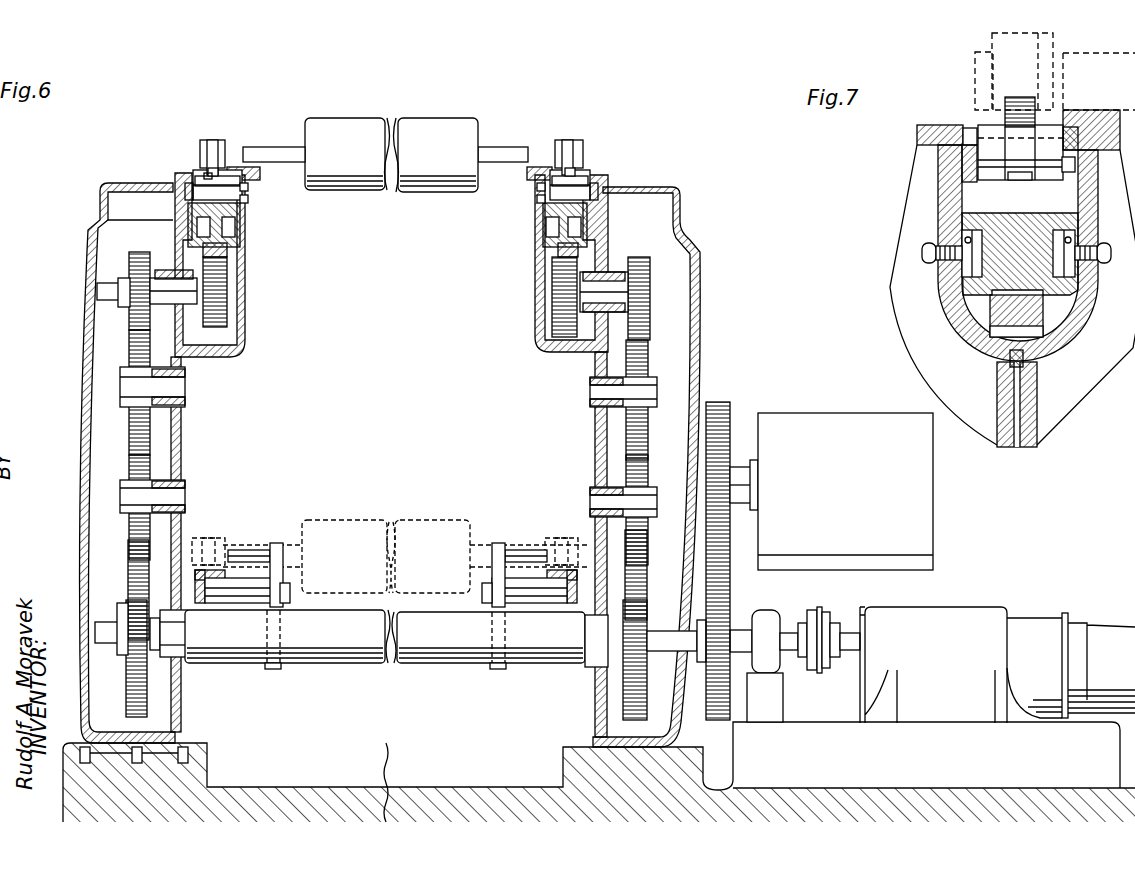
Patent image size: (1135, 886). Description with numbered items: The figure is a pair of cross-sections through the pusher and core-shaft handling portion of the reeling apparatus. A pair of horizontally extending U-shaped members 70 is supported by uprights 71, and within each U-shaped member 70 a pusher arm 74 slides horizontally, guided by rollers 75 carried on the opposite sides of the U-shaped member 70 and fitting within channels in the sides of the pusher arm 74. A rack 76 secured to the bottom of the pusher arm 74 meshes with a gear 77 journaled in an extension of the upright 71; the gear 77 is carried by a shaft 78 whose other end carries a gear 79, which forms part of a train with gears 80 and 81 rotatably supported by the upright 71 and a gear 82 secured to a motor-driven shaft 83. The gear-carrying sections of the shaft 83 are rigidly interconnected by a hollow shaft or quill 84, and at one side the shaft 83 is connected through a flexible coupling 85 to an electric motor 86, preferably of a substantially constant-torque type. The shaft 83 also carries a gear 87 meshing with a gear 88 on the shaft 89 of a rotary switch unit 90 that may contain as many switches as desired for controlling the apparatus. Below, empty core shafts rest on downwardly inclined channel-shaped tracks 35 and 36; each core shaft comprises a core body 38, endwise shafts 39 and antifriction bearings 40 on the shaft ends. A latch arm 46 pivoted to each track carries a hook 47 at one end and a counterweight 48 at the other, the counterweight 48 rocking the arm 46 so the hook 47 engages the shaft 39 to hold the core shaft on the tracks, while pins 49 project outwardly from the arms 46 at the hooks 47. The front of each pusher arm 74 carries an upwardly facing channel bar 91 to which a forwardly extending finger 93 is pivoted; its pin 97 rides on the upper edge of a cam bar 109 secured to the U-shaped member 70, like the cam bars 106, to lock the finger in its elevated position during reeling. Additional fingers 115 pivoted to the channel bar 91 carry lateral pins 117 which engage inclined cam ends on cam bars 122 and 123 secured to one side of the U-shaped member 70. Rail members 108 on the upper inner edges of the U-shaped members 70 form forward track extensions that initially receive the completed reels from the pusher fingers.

In FIG. 6, the downwardly inclined track 35 is at (248, 552).
In FIG. 6, the downwardly inclined track 36 is at (550, 570).
In FIG. 6, the core body 38 is at (405, 122).
In FIG. 6, the shaft 39 is at (292, 145).
In FIG. 7, the shaft 39 is at (1093, 56).
In FIG. 6, the antifriction bearing 40 is at (210, 137).
In FIG. 7, the antifriction bearing 40 is at (1033, 47).
In FIG. 6, the arm 46 is at (273, 593).
In FIG. 6, the hook formation 47 is at (273, 542).
In FIG. 6, the counterweight 48 is at (268, 669).
In FIG. 6, the pin 49 is at (228, 577).
In FIG. 6, the U-shaped member 70 is at (245, 282).
In FIG. 7, the U-shaped member 70 is at (943, 217).
In FIG. 6, the upright 71 is at (178, 425).
In FIG. 6, the pusher arm 74 is at (242, 213).
In FIG. 7, the pusher arm 74 is at (962, 232).
In FIG. 6, the roller 75 is at (240, 233).
In FIG. 7, the roller 75 is at (967, 260).
In FIG. 6, the rack 76 is at (233, 245).
In FIG. 7, the rack 76 is at (987, 310).
In FIG. 6, the gear 77 is at (222, 333).
In FIG. 6, the shaft 78 is at (193, 347).
In FIG. 6, the gear 79 is at (130, 322).
In FIG. 6, the gear 80 is at (132, 423).
In FIG. 6, the gear 81 is at (137, 510).
In FIG. 6, the gear 82 is at (132, 587).
In FIG. 6, the motor-driven shaft 83 is at (103, 630).
In FIG. 6, the hollow shaft or quill 84 is at (340, 662).
In FIG. 6, the flexible coupling 85 is at (815, 673).
In FIG. 6, the electric motor 86 is at (1023, 615).
In FIG. 6, the gear 87 is at (730, 600).
In FIG. 6, the gear 88 is at (720, 412).
In FIG. 6, the shaft 89 is at (757, 485).
In FIG. 6, the rotary switch unit 90 is at (850, 412).
In FIG. 6, the channel bar 91 is at (193, 173).
In FIG. 7, the channel bar 91 is at (987, 137).
In FIG. 6, the finger 93 is at (217, 170).
In FIG. 7, the finger 93 is at (1013, 100).
In FIG. 7, the pin 97 is at (968, 130).
In FIG. 6, the cam bar 106 is at (195, 185).
In FIG. 6, the rail member 108 is at (240, 166).
In FIG. 6, the cam bar 109 is at (186, 188).
In FIG. 7, the cam bar 109 is at (973, 167).
In FIG. 6, the finger 115 is at (206, 172).
In FIG. 7, the finger 115 is at (1013, 180).
In FIG. 7, the pin 117 is at (1068, 165).
In FIG. 6, the cam bar 122 is at (248, 187).
In FIG. 7, the cam bar 122 is at (1078, 125).
In FIG. 6, the cam bar 123 is at (248, 200).